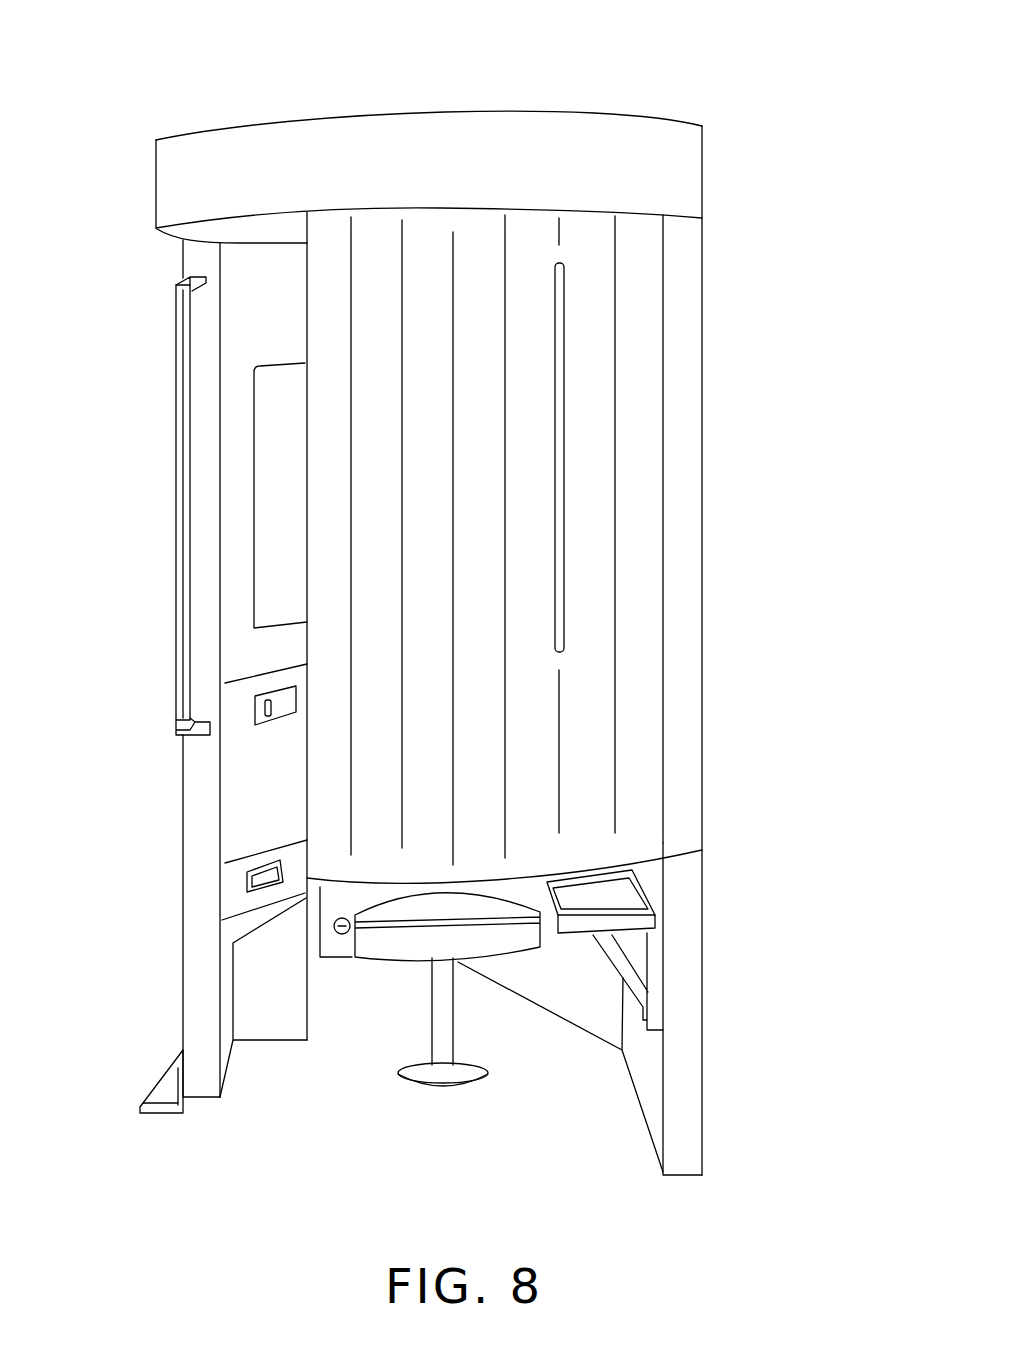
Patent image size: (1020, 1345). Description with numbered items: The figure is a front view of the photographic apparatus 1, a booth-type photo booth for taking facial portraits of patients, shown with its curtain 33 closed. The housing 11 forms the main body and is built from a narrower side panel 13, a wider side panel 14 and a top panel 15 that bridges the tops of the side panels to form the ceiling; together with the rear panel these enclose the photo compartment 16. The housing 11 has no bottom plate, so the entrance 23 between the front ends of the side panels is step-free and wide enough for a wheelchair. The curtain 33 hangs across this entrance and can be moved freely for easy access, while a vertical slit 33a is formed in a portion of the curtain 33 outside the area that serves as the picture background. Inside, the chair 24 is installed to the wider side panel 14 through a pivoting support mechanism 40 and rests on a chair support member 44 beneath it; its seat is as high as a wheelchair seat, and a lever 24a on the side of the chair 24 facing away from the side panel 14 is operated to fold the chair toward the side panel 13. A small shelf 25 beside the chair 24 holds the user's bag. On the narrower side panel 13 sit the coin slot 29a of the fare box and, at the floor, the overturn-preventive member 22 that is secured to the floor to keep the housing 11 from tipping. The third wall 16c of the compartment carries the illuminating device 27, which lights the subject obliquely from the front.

The photographic apparatus 1 is at (607, 80).
The housing 11 is at (220, 147).
The side panel 13 is at (188, 437).
The side panel 14 is at (688, 940).
The top panel 15 is at (427, 128).
The photo compartment 16 is at (365, 1045).
The third wall 16c is at (238, 305).
The overturn-preventive member 22 is at (155, 1103).
The entrance 23 is at (573, 1097).
The chair 24 is at (490, 942).
The lever 24a is at (337, 938).
The small shelf 25 is at (597, 900).
The illuminating device 27 is at (253, 388).
The coin slot 29a is at (255, 705).
The curtain 33 is at (640, 492).
The vertical slit 33a is at (560, 560).
The pivoting support mechanism 40 is at (570, 945).
The chair support member 44 is at (430, 1090).